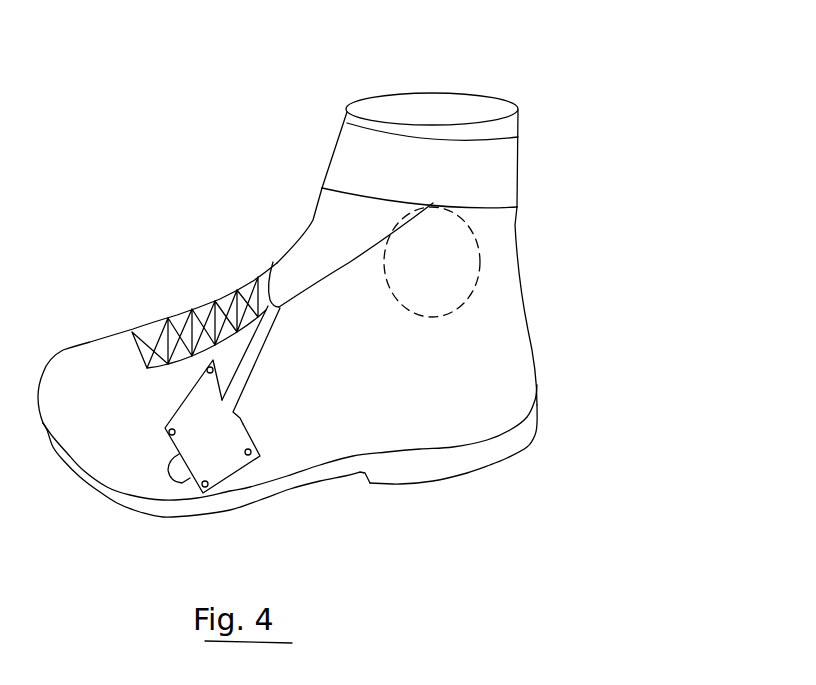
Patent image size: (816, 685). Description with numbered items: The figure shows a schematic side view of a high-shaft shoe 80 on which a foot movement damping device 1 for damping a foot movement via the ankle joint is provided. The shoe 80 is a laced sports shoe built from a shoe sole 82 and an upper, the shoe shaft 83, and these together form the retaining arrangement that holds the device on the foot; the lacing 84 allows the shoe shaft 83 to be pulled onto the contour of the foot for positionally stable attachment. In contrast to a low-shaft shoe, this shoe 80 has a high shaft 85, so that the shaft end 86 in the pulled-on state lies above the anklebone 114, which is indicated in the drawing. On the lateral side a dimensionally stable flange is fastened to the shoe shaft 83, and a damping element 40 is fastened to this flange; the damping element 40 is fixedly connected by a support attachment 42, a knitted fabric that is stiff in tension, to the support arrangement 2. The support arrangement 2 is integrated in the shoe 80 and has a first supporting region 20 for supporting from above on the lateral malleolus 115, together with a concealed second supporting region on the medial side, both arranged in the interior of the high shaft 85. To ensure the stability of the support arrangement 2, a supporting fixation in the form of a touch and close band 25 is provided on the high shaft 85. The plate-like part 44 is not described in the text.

The foot movement damping device 1 is at (187, 188).
The support arrangement 2 is at (273, 90).
The first supporting region 20 is at (433, 203).
The touch and close band 25 is at (353, 133).
The damping element 40 is at (245, 432).
The support attachment 42 is at (318, 230).
The fastening plate 44 is at (228, 462).
The shoe 80 is at (641, 100).
The shoe sole 82 is at (110, 495).
The shoe shaft 83 is at (90, 343).
The lacing 84 is at (175, 315).
The high shaft 85 is at (665, 153).
The shaft end 86 is at (493, 97).
The anklebone 114 is at (603, 223).
The lateral malleolus 115 is at (483, 277).